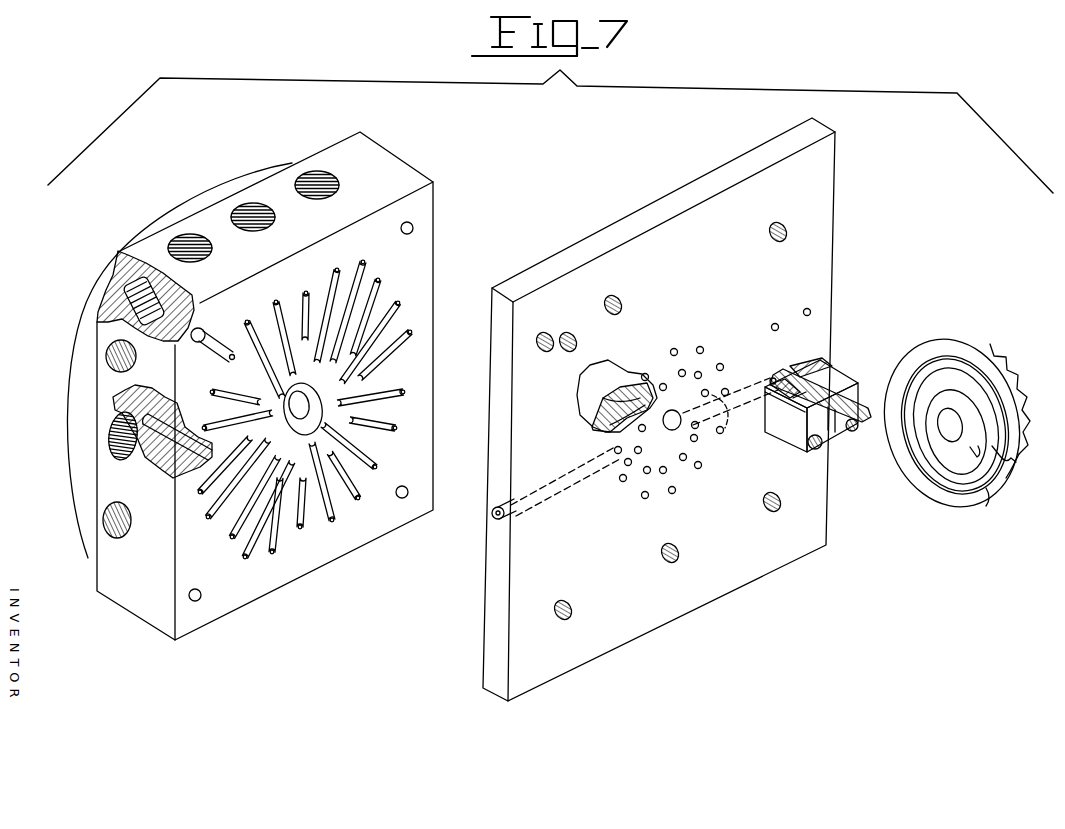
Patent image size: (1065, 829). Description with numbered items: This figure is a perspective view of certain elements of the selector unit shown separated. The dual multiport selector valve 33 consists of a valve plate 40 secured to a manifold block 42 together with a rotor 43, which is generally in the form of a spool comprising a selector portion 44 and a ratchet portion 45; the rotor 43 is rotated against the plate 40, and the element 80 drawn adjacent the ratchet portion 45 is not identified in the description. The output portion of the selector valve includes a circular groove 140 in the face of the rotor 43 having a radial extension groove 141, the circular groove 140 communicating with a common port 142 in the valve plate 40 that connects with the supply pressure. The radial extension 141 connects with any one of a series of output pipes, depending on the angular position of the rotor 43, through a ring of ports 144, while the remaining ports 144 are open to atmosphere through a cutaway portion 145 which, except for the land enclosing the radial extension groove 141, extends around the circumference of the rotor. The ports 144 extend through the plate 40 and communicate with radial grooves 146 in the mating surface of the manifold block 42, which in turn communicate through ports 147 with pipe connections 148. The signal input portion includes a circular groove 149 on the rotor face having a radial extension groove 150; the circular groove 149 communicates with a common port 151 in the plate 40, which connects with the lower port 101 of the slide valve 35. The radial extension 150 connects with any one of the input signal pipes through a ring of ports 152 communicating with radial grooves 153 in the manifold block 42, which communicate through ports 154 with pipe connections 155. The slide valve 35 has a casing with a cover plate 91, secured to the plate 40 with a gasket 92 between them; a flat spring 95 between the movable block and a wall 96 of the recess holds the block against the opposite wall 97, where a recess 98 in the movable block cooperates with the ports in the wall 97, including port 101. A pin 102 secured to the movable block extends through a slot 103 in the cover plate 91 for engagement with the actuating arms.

The dual multiport selector valve 33 is at (944, 428).
The slide valve 35 is at (788, 435).
The valve plate 40 is at (745, 593).
The manifold block 42 is at (240, 600).
The rotor 43 is at (945, 509).
The selector portion 44 is at (958, 343).
The ratchet portion 45 is at (1009, 375).
The gear 80 is at (990, 355).
The cover plate 91 is at (840, 438).
The gasket 92 is at (766, 413).
The flat spring 95 is at (830, 364).
The wall 96 is at (842, 368).
The wall 97 is at (785, 410).
The recess 98 is at (818, 367).
The port 101 is at (803, 397).
The pin 102 is at (858, 418).
The slot 103 is at (833, 411).
The circular groove 140 is at (940, 481).
The radial extension groove 141 is at (1006, 470).
The common port 142 is at (627, 466).
The ports 144 is at (646, 373).
The cutaway portion 145 is at (985, 498).
The radial grooves 146 is at (245, 553).
The ports 147 is at (366, 264).
The pipe connections 148 is at (312, 178).
The circular groove 149 is at (943, 454).
The radial extension groove 150 is at (975, 456).
The common port 151 is at (696, 427).
The ports 152 is at (630, 397).
The radial grooves 153 is at (279, 316).
The ports 154 is at (168, 347).
The pipe connections 155 is at (132, 294).